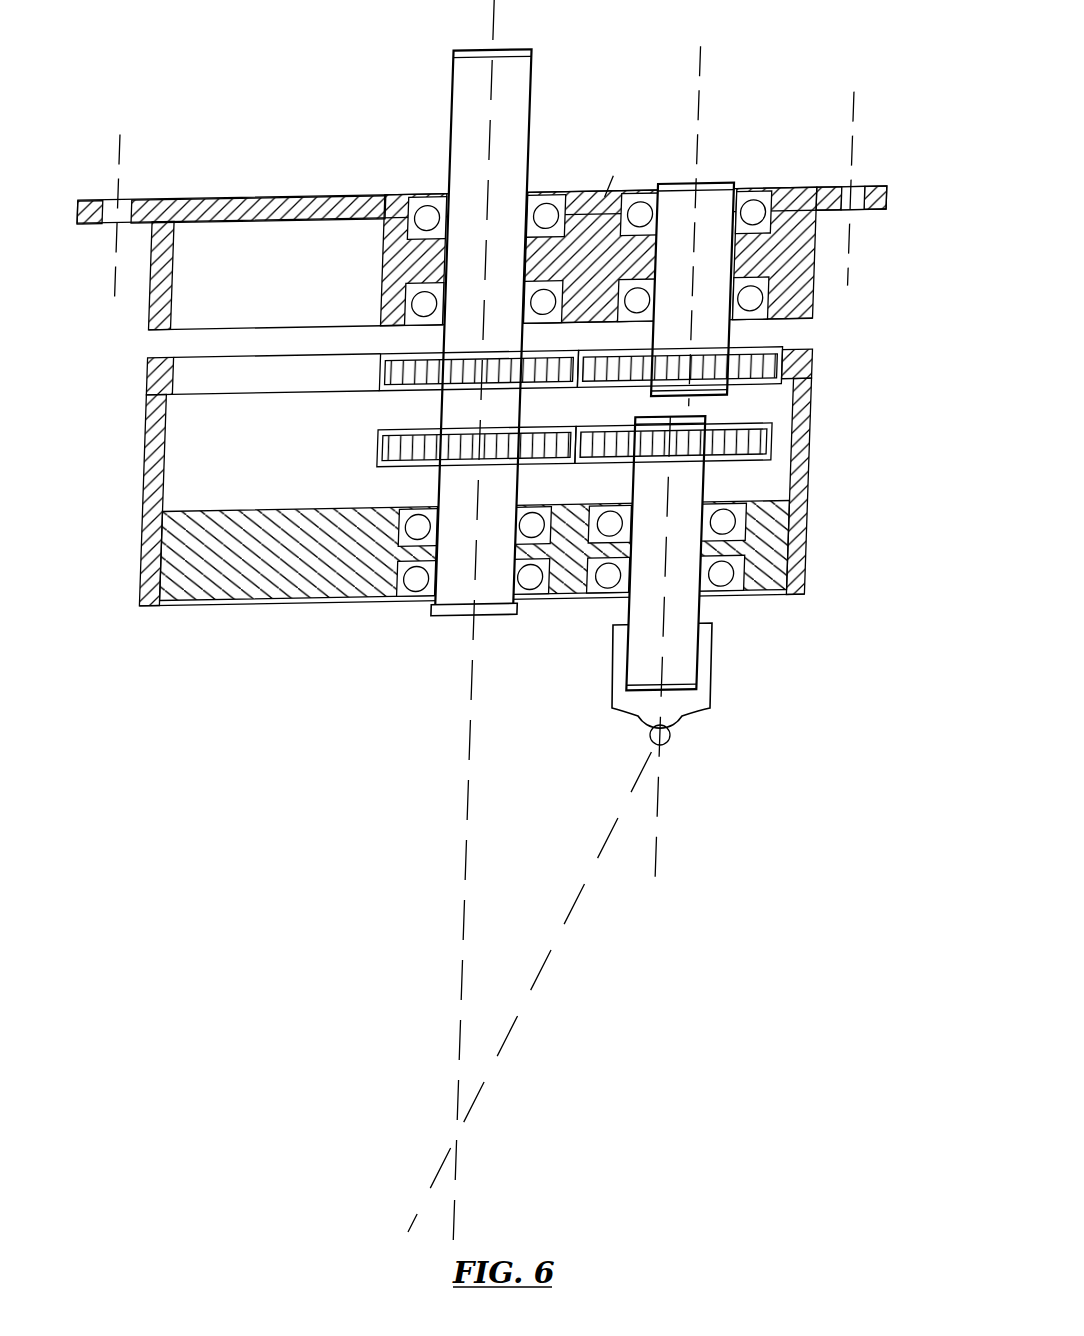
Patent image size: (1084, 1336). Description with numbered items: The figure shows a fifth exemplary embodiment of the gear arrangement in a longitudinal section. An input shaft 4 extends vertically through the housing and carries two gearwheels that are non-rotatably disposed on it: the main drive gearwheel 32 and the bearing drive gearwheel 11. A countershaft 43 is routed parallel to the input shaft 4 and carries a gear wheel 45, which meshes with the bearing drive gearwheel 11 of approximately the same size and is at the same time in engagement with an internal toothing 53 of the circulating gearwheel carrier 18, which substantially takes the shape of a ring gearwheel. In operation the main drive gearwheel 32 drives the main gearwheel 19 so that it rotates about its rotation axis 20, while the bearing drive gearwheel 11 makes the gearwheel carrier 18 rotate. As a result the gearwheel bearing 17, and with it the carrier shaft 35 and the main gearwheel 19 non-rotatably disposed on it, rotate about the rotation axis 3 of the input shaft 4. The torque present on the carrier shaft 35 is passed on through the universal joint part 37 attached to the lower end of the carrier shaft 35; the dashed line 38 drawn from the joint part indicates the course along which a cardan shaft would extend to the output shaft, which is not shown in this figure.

The rotation axis 3 is at (472, 683).
The input shaft 4 is at (466, 152).
The bearing drive gearwheel 11 is at (400, 365).
The gearwheel bearing 17 is at (805, 545).
The gearwheel carrier 18 is at (243, 575).
The main gearwheel 19 is at (772, 447).
The rotation axis 20 is at (660, 812).
The main drive gearwheel 32 is at (407, 452).
The carrier shaft 35 is at (702, 607).
The universal joint part 37 is at (712, 697).
The dashed line 38 is at (542, 968).
The countershaft 43 is at (713, 185).
The gear wheel 45 is at (787, 350).
The internal toothing 53 is at (150, 368).